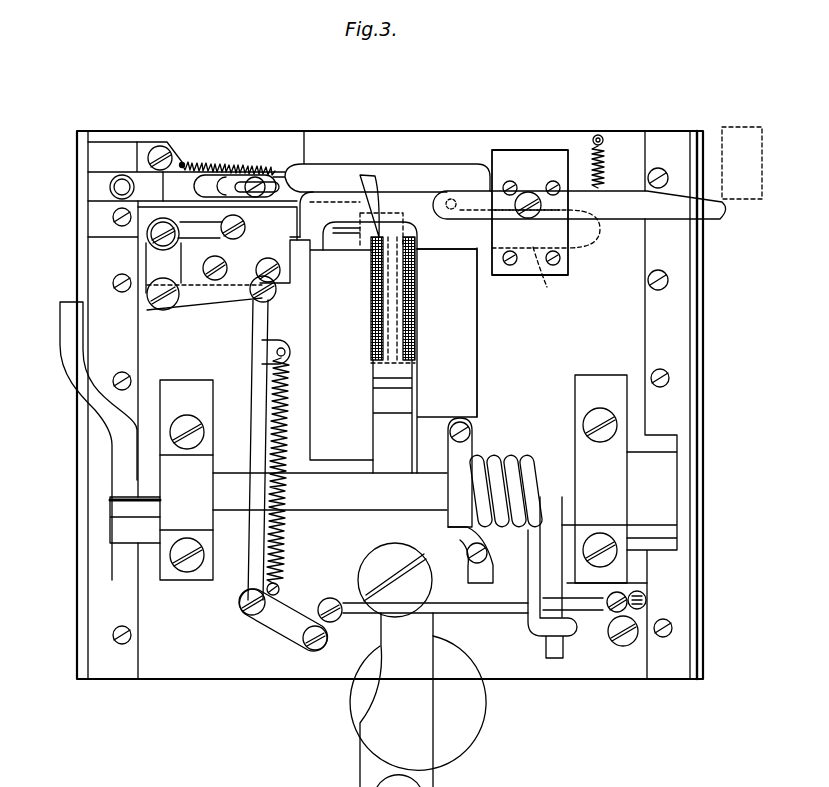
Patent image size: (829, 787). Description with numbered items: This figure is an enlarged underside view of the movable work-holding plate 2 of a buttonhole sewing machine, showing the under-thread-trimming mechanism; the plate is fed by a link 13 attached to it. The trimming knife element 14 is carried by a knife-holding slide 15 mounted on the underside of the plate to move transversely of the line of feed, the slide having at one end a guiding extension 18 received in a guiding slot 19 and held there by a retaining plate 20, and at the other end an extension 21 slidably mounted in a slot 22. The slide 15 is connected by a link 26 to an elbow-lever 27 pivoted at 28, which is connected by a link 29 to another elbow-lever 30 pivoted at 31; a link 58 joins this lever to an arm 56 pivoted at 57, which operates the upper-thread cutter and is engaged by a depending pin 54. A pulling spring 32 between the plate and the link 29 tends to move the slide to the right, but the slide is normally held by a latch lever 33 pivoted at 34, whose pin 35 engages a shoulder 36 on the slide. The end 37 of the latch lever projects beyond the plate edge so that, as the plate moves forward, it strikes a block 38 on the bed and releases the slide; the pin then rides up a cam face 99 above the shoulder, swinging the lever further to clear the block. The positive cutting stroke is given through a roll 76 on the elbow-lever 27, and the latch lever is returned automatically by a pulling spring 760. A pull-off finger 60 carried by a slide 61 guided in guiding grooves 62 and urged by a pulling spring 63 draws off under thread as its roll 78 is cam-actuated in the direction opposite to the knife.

The work-holding plate 2 is at (610, 342).
The link 13 is at (368, 735).
The knife element 14 is at (380, 228).
The knife-holding slide 15 is at (327, 203).
The guiding extension 18 is at (550, 277).
The guiding slot 19 is at (585, 237).
The retaining plate 20 is at (500, 272).
The extension 21 is at (205, 213).
The slot 22 is at (188, 207).
The link 26 is at (202, 233).
The elbow-lever 27 is at (153, 259).
The pivot 28 is at (171, 303).
The link 29 is at (257, 410).
The elbow-lever 30 is at (272, 630).
The pivot 31 is at (301, 668).
The pulling spring 32 is at (284, 528).
The latch lever 33 is at (612, 197).
The pivot 34 is at (530, 193).
The pin 35 is at (460, 197).
The shoulder 36 is at (453, 197).
The end of latch lever 37 is at (728, 203).
The block 38 is at (748, 128).
The pin 54 is at (644, 600).
The arm 56 is at (607, 618).
The pivot 57 is at (625, 645).
The link 58 is at (493, 607).
The pull-off finger 60 is at (378, 233).
The slide 61 is at (305, 177).
The guiding grooves 62 is at (135, 172).
The pulling spring 63 is at (243, 167).
The roll 76 is at (148, 237).
The pulling spring 760 is at (603, 147).
The roll 78 is at (110, 186).
The cam face 99 is at (450, 190).